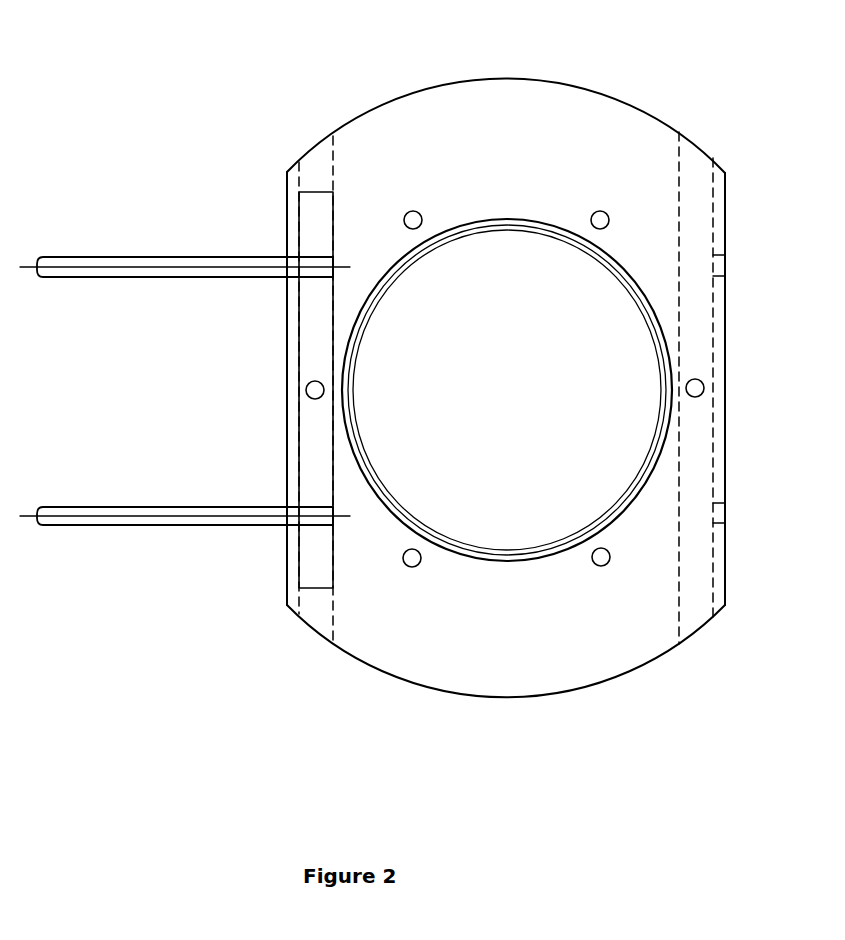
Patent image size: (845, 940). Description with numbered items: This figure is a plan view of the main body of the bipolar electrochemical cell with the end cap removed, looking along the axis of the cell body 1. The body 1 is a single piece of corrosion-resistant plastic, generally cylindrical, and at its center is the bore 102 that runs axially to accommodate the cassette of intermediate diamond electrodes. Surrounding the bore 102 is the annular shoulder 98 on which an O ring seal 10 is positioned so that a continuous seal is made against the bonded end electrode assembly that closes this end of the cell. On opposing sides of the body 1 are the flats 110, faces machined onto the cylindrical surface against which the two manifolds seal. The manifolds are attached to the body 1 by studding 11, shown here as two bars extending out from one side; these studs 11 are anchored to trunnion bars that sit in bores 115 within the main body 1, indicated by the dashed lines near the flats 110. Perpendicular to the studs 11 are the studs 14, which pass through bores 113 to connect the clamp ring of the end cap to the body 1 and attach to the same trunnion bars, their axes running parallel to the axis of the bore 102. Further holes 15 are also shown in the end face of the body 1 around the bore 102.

The cell body 1 is at (518, 360).
The O ring seal 10 is at (638, 492).
The studding 11 is at (155, 508).
The studs 14 is at (309, 383).
The holes 15 is at (413, 211).
The annular shoulder 98 is at (655, 440).
The bore 102 is at (538, 238).
The flats 110 is at (287, 450).
The bores 113 is at (700, 396).
The bores 115 is at (320, 157).